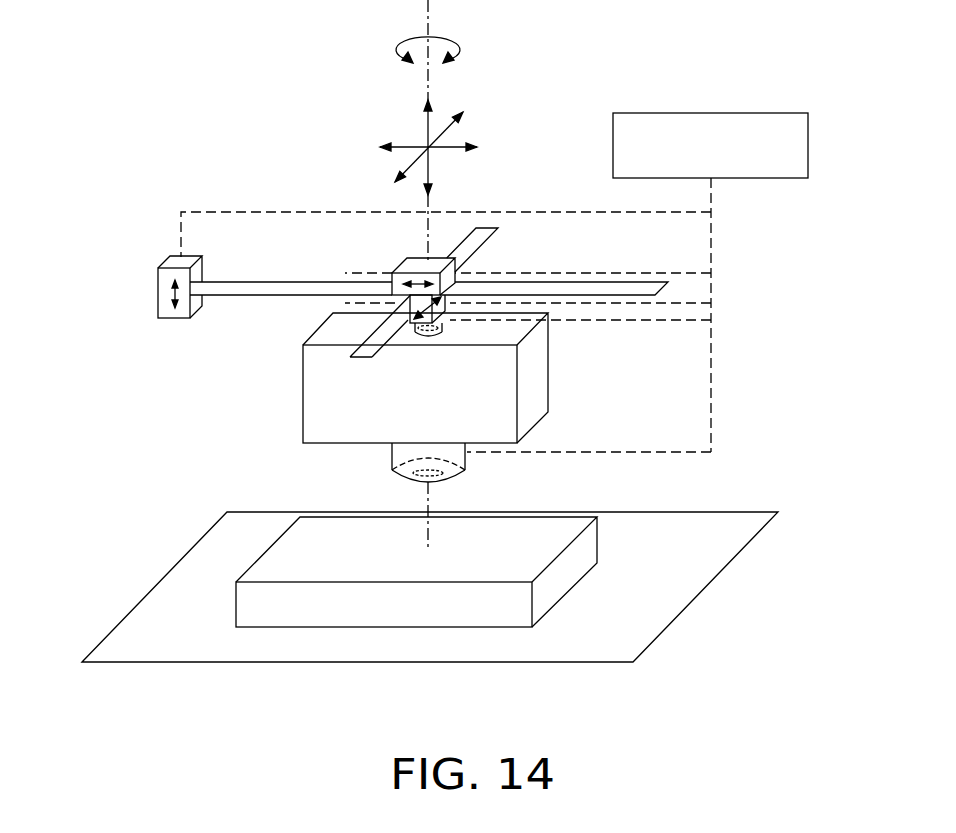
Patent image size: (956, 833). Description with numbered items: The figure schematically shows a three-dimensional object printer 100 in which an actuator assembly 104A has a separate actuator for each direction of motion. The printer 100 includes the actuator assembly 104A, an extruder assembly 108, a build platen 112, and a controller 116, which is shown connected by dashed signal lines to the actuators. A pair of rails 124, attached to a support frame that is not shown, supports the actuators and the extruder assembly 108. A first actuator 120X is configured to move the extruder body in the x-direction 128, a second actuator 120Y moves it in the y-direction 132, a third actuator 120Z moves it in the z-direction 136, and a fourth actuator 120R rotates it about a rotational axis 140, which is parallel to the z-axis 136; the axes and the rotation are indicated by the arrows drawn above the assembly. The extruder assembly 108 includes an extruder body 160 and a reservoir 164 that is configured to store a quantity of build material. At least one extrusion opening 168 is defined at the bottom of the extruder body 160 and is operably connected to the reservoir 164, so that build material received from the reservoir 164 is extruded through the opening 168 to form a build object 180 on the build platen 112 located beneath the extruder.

The three-dimensional object printer 100 is at (223, 108).
The actuator assembly 104A is at (218, 177).
The extruder assembly 108 is at (265, 415).
The build platen 112 is at (620, 522).
The controller 116 is at (613, 143).
The first actuator 120X is at (391, 276).
The second actuator 120Y is at (410, 308).
The third actuator 120Z is at (158, 283).
The fourth actuator 120R is at (442, 328).
The rails 124 is at (498, 228).
The x-axis 128 is at (408, 146).
The y-axis 132 is at (412, 162).
The z-axis 136 is at (430, 122).
The rotational axis 140 is at (427, 28).
The extruder body 160 is at (398, 453).
The reservoir 164 is at (313, 392).
The extrusion opening 168 is at (420, 482).
The build object 180 is at (382, 613).